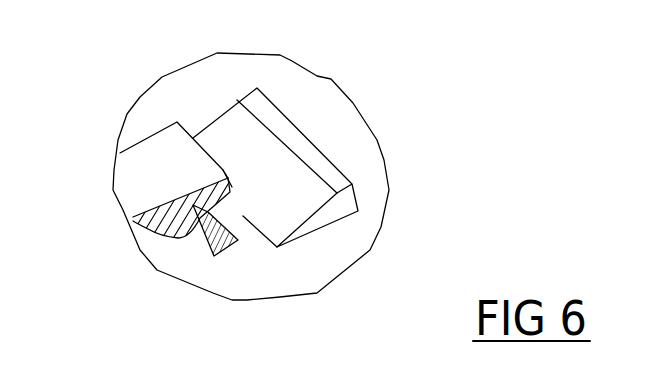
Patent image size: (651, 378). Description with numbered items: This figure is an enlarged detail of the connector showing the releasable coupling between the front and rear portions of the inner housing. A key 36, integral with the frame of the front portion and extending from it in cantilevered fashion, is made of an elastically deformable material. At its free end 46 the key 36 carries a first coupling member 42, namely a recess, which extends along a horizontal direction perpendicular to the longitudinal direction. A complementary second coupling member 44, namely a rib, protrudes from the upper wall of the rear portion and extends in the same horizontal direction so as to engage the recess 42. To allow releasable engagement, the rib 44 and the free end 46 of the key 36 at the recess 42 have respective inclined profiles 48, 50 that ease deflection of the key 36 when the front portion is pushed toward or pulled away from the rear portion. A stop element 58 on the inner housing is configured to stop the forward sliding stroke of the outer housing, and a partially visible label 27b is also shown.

The key 36 is at (155, 162).
The first coupling member 42 is at (182, 236).
The second coupling member 44 is at (208, 215).
The free end 46 is at (180, 145).
The inclined profile 48 is at (227, 235).
The inclined profile 50 is at (228, 220).
The stop element 58 is at (258, 146).
The member 27b is at (135, 4).